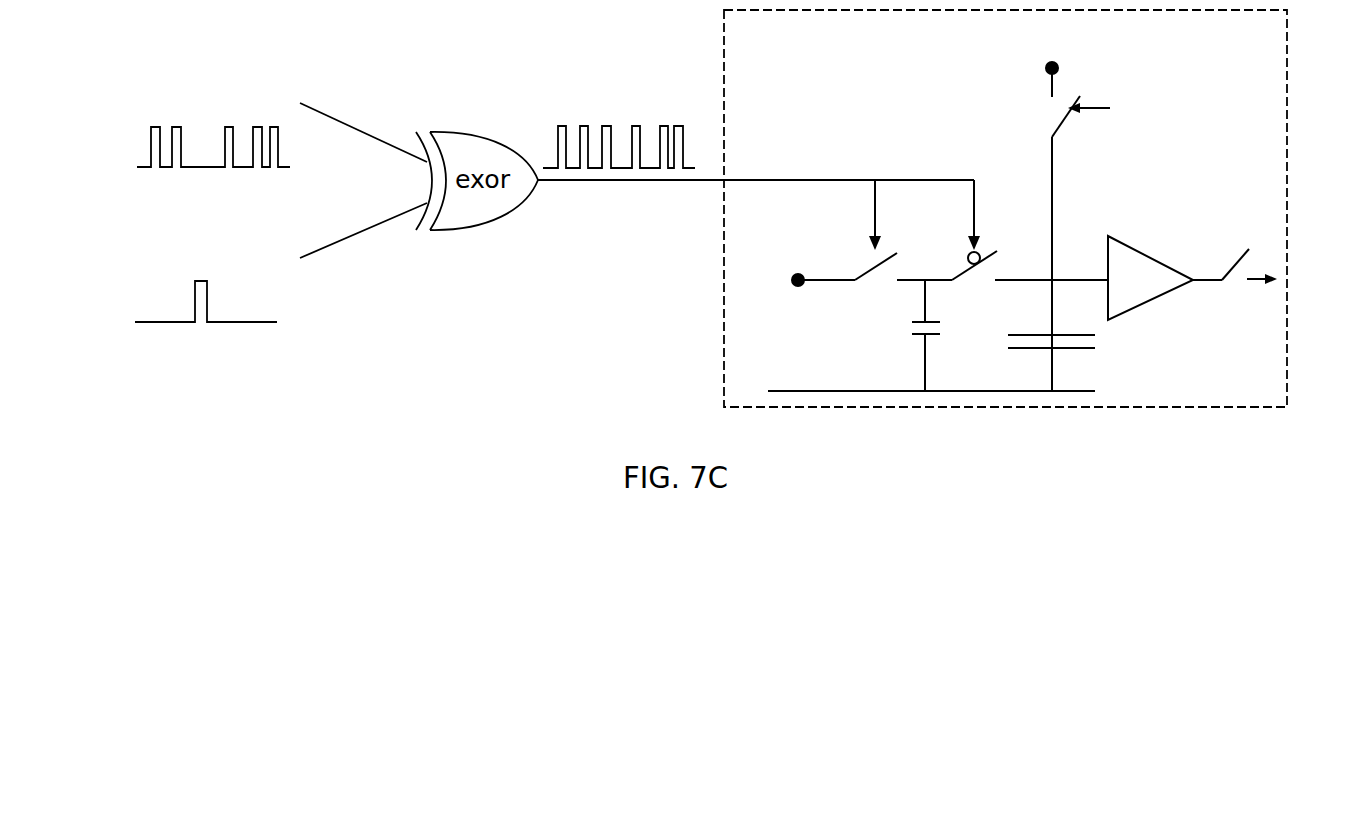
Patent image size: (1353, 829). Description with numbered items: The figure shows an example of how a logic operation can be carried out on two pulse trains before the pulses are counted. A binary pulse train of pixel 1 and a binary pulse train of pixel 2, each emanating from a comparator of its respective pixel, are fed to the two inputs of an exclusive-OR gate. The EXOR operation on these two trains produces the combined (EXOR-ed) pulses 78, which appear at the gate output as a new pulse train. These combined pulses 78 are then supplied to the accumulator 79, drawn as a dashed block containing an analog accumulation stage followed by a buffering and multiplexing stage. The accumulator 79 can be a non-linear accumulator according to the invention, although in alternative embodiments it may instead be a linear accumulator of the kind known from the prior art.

The pixel 1 is at (254, 104).
The pixel 2 is at (247, 252).
The combined (EXOR-ed) pulses 78 is at (653, 96).
The accumulator 79 is at (1287, 117).